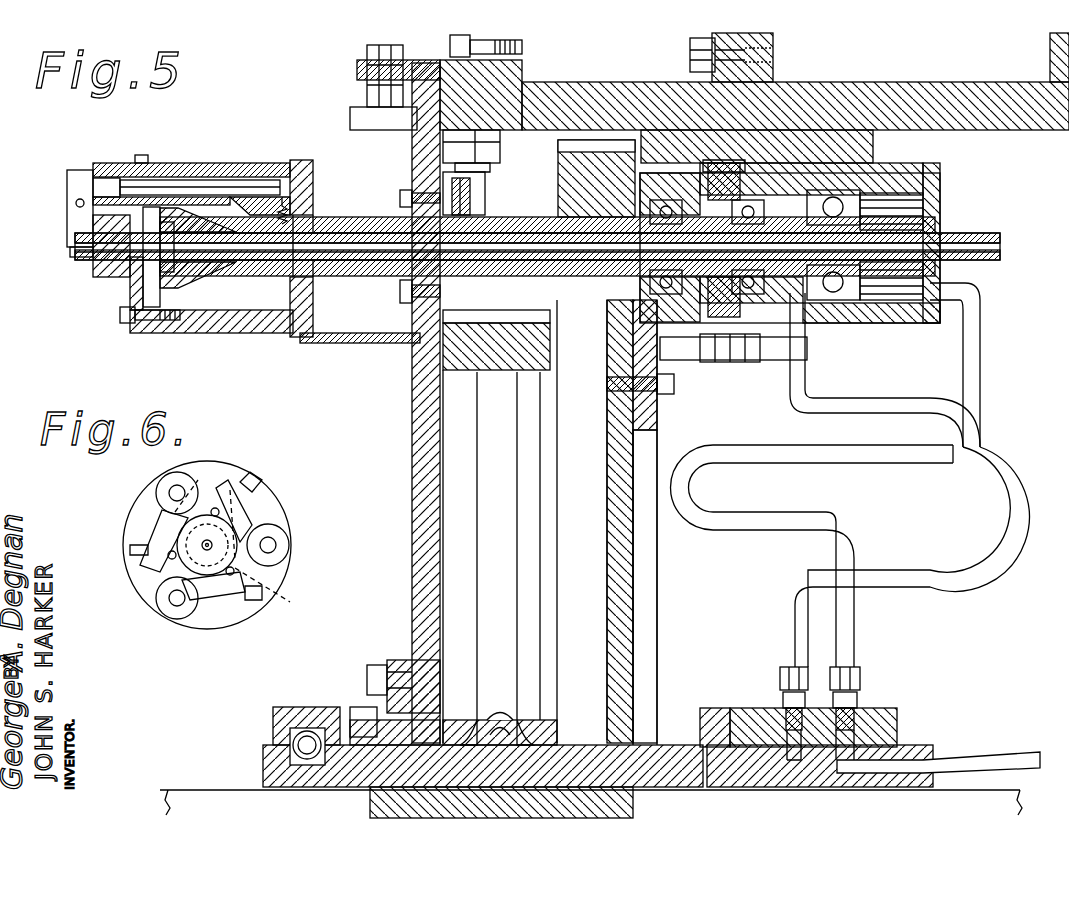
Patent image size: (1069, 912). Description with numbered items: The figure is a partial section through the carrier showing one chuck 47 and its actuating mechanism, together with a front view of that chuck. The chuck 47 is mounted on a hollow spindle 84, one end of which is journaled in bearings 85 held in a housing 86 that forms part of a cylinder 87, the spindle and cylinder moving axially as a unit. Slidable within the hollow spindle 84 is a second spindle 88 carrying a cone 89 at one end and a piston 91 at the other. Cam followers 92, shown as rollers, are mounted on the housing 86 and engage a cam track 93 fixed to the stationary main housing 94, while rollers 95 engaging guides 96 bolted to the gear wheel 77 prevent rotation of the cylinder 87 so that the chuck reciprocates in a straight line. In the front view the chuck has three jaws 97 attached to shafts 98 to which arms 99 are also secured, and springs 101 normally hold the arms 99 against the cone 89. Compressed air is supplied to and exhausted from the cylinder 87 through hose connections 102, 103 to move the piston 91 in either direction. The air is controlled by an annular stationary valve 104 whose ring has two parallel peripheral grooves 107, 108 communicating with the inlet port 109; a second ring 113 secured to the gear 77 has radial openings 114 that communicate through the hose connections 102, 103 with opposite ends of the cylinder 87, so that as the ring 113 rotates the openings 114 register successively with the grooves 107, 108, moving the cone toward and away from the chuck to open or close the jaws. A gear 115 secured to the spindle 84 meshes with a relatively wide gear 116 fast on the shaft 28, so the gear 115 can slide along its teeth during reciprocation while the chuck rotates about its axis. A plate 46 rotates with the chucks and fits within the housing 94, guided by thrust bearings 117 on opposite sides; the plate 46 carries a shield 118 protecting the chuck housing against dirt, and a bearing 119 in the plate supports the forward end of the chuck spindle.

In FIG. 5, the shaft 28 is at (225, 790).
In FIG. 5, the plate 46 is at (412, 487).
In FIG. 5, the chuck 47 is at (165, 337).
In FIG. 5, the gear wheel 77 is at (578, 150).
In FIG. 5, the hollow spindle 84 is at (393, 283).
In FIG. 5, the bearing 85 is at (742, 165).
In FIG. 5, the housing 86 is at (684, 350).
In FIG. 5, the cylinder 87 is at (905, 175).
In FIG. 5, the second spindle 88 is at (255, 250).
In FIG. 5, the cone 89 is at (240, 268).
In FIG. 5, the piston 91 is at (868, 178).
In FIG. 5, the cam follower 92 is at (700, 128).
In FIG. 5, the cam track 93 is at (800, 130).
In FIG. 5, the main housing 94 is at (1005, 98).
In FIG. 5, the roller 95 is at (752, 362).
In FIG. 5, the guide 96 is at (770, 360).
In FIG. 5, the jaw 97 is at (67, 238).
In FIG. 6, the jaw 97 is at (252, 512).
In FIG. 5, the shaft 98 is at (257, 182).
In FIG. 6, the shaft 98 is at (282, 555).
In FIG. 5, the arm 99 is at (215, 172).
In FIG. 6, the arm 99 is at (242, 550).
In FIG. 5, the spring 101 is at (278, 212).
In FIG. 5, the hose connection 102 is at (993, 476).
In FIG. 5, the hose connection 103 is at (737, 528).
In FIG. 5, the annular stationary valve 104 is at (912, 745).
In FIG. 5, the peripheral groove 107 is at (792, 760).
In FIG. 5, the peripheral groove 108 is at (850, 745).
In FIG. 5, the inlet port 109 is at (962, 765).
In FIG. 5, the second ring 113 is at (897, 710).
In FIG. 5, the radial opening 114 is at (760, 712).
In FIG. 5, the gear 115 is at (486, 186).
In FIG. 5, the gear 116 is at (450, 358).
In FIG. 5, the thrust bearing 117 is at (355, 118).
In FIG. 5, the shield 118 is at (320, 342).
In FIG. 5, the bearing 119 is at (400, 292).